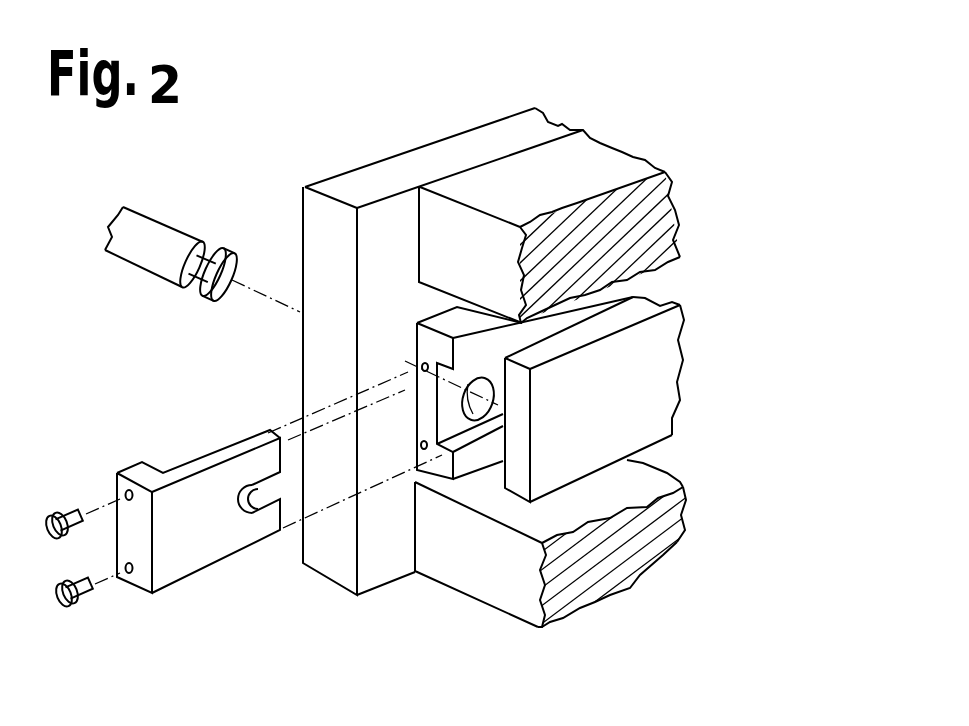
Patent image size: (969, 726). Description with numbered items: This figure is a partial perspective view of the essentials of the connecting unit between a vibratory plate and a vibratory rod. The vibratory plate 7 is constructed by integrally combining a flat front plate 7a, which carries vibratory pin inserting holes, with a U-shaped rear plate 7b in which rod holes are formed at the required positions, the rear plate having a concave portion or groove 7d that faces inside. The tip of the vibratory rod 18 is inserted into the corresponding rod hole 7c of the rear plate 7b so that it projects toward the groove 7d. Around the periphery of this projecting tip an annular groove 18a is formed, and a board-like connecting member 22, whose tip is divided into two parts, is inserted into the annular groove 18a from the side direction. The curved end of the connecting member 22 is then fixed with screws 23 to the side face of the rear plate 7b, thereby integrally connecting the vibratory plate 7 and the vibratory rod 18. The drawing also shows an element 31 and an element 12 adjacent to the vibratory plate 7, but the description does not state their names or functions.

The mounting plate 31 is at (380, 167).
The upper block 12 is at (570, 168).
The vibratory plate 7 is at (693, 321).
The front plate 7a is at (632, 365).
The rear plate 7b is at (434, 334).
The rod hole 7c is at (607, 431).
The concave portion (groove) 7d is at (451, 544).
The vibratory rod 18 is at (135, 242).
The annular groove 18a is at (181, 288).
The connecting member 22 is at (199, 536).
The screws 23 is at (56, 540).